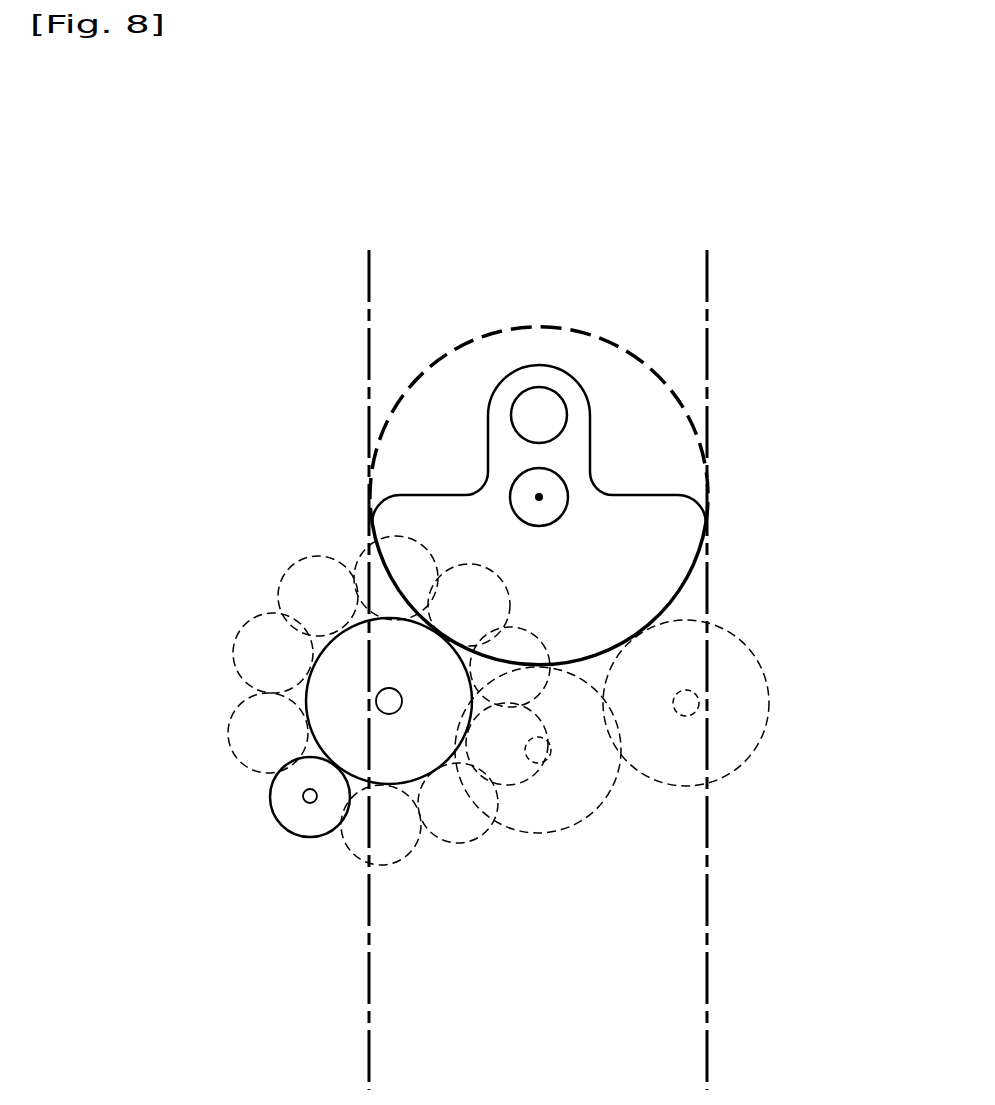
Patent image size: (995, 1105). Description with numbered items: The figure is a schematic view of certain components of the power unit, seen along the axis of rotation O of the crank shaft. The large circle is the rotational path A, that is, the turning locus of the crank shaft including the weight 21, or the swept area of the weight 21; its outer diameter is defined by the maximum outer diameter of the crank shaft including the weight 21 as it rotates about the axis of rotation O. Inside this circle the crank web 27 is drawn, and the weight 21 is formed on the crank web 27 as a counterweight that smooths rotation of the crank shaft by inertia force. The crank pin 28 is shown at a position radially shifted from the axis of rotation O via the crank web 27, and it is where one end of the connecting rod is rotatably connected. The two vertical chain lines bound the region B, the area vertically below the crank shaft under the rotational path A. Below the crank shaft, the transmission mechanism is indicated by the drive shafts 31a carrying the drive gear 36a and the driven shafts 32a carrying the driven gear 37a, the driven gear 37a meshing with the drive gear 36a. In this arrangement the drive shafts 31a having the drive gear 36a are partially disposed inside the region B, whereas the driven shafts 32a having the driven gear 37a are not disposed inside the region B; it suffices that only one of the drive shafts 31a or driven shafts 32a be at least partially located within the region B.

The weight 21 is at (697, 567).
The crank web 27 is at (590, 442).
The crank pin 28 is at (543, 397).
The drive shafts 31a is at (388, 703).
The driven shafts 32a is at (310, 800).
The drive gear 36a is at (418, 787).
The driven gear 37a is at (273, 812).
The rotational path A is at (393, 408).
The region vertically below the crank shaft B is at (363, 1012).
The axis of rotation O is at (539, 500).